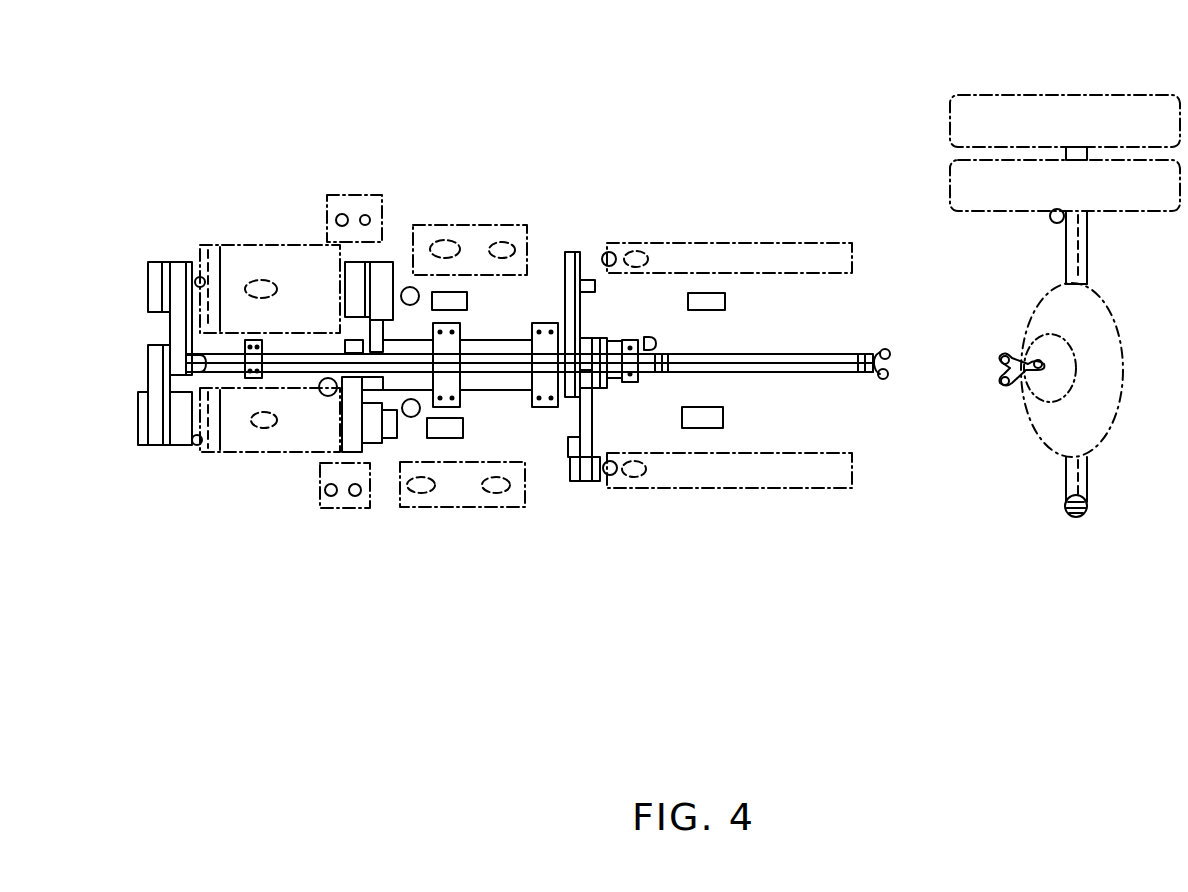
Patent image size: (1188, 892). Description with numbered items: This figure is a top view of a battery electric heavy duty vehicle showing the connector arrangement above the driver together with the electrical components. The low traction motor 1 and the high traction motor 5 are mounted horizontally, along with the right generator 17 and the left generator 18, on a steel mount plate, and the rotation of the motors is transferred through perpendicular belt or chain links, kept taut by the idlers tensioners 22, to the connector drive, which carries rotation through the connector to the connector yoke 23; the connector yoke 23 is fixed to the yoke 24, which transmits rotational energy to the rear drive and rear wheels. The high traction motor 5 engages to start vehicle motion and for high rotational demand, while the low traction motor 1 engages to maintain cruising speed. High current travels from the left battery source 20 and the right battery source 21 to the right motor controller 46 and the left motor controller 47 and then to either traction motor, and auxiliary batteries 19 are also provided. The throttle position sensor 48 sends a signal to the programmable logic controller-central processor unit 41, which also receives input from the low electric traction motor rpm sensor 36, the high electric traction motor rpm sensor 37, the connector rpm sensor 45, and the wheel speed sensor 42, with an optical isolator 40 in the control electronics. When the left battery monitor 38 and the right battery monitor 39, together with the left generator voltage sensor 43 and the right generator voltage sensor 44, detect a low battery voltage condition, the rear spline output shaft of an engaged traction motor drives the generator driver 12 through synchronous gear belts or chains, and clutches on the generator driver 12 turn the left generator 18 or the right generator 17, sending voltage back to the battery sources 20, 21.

The low traction motor 1 is at (257, 453).
The high traction motor 5 is at (297, 245).
The generator driver 12 is at (498, 393).
The right generator 17 is at (692, 242).
The left generator 18 is at (663, 490).
The auxiliary batteries 19 is at (365, 194).
The left battery source 20 is at (457, 507).
The right battery source 21 is at (455, 225).
The idlers tensioners 22 is at (562, 265).
The connector yoke 23 is at (881, 346).
The yoke 24 is at (1033, 384).
The low electric traction motor rpm sensor 36 is at (194, 445).
The high electric traction motor rpm sensor 37 is at (199, 277).
The left battery monitor 38 is at (437, 438).
The right battery monitor 39 is at (458, 187).
The optical isolator 40 is at (412, 417).
The programmable logic controller-central processor unit 41 is at (411, 286).
The wheel speed sensor 42 is at (1049, 217).
The left generator voltage sensor 43 is at (608, 476).
The right generator voltage sensor 44 is at (607, 252).
The connector rpm sensor 45 is at (648, 337).
The right motor controller 46 is at (704, 293).
The left motor controller 47 is at (706, 422).
The throttle position sensor 48 is at (330, 396).